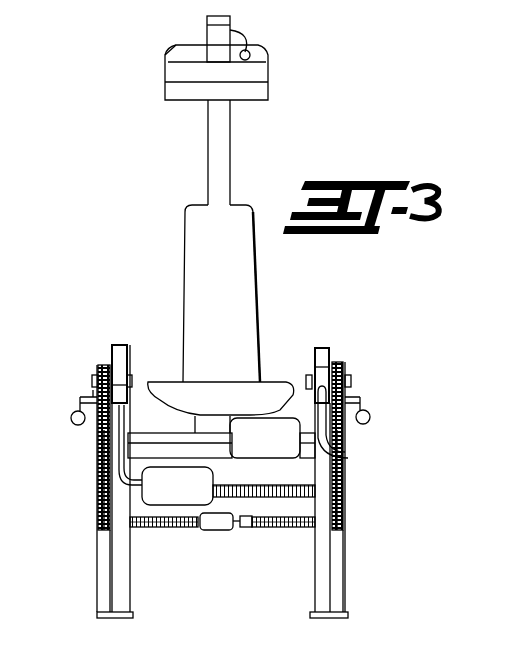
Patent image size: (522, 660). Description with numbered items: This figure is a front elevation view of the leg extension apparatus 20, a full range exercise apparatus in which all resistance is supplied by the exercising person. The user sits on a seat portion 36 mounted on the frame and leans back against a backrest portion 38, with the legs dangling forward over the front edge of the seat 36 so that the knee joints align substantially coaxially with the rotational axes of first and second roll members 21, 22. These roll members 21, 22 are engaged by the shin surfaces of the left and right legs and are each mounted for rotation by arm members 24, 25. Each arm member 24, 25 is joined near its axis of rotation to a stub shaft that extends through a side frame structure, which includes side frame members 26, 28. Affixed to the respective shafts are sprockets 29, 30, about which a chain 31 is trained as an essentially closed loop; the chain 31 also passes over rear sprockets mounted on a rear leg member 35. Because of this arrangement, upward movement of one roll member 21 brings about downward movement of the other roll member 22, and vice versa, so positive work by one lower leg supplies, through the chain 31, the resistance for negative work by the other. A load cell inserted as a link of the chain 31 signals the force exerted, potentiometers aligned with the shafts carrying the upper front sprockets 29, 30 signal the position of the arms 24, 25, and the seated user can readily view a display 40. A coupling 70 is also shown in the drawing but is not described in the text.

The leg extension apparatus 20 is at (162, 245).
The first roll member 21 is at (278, 452).
The second roll member 22 is at (170, 500).
The arm member 24 is at (345, 452).
The arm member 25 is at (125, 487).
The side frame member 26 is at (348, 372).
The side frame member 28 is at (96, 375).
The sprocket 29 is at (340, 360).
The sprocket 30 is at (105, 363).
The chain 31 is at (105, 450).
The rear leg member 35 is at (108, 586).
The seat portion 36 is at (232, 386).
The backrest portion 38 is at (228, 287).
The display 40 is at (186, 120).
The coupling 70 is at (222, 530).